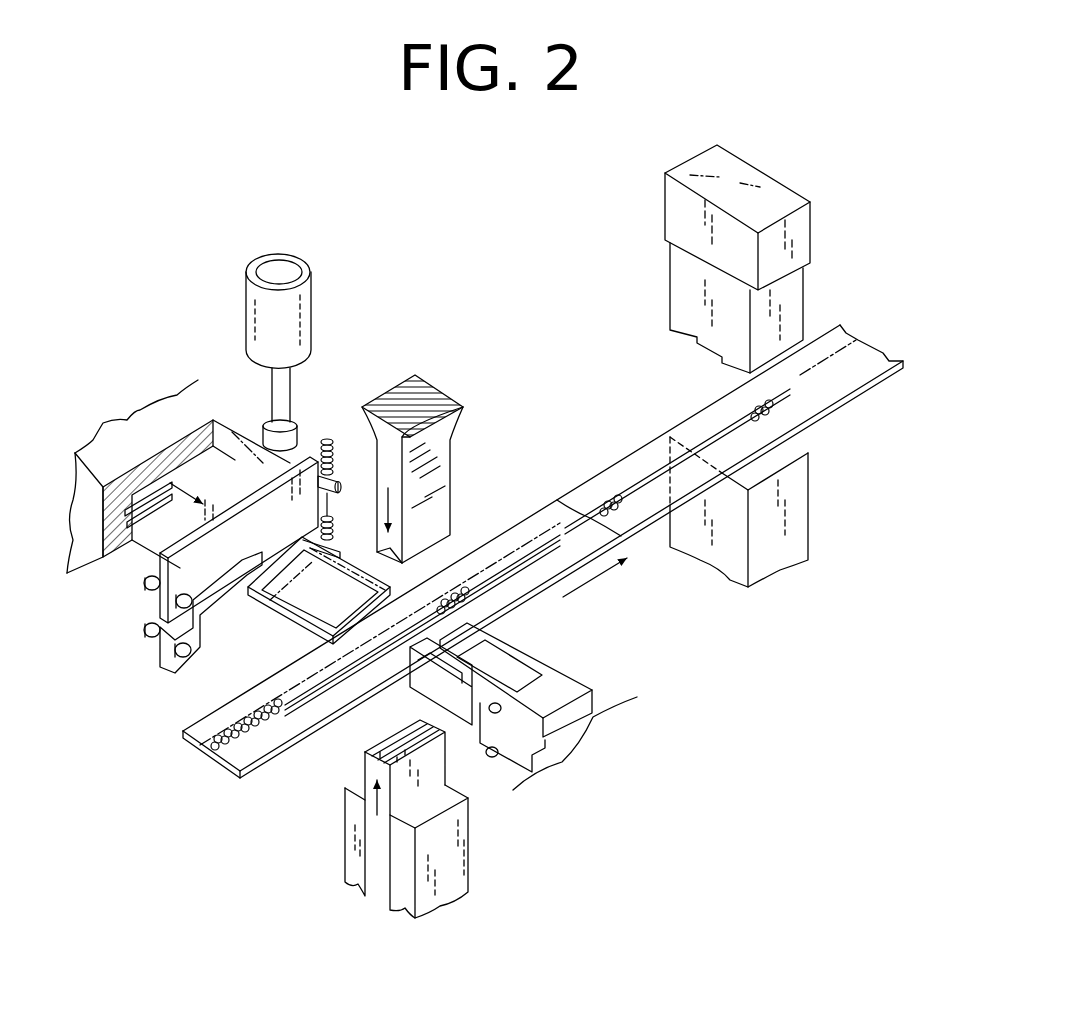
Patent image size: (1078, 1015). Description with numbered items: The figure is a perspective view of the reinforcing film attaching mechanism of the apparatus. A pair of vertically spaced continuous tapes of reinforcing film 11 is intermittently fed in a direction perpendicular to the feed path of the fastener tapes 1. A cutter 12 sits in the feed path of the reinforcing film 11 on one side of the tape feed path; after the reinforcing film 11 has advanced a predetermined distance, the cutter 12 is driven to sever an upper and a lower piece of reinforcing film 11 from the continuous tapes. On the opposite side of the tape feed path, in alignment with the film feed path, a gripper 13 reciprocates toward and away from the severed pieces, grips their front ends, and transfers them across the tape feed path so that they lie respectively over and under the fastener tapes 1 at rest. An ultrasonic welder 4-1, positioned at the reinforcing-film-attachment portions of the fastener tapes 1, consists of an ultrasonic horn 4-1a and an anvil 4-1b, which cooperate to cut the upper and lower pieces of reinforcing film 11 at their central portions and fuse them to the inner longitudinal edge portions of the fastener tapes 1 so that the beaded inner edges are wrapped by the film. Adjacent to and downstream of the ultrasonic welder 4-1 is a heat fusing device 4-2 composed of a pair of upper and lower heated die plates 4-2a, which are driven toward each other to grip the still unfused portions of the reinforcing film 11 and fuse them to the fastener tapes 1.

The fastener tapes 1 is at (250, 743).
The reinforcing film 11 is at (163, 497).
The cutter 12 is at (213, 622).
The gripper 13 is at (470, 668).
The ultrasonic welder 4-1 is at (422, 836).
The ultrasonic horn 4-1a is at (443, 465).
The anvil 4-1b is at (457, 870).
The heat fusing device 4-2 is at (791, 259).
The die plates 4-2a is at (793, 308).